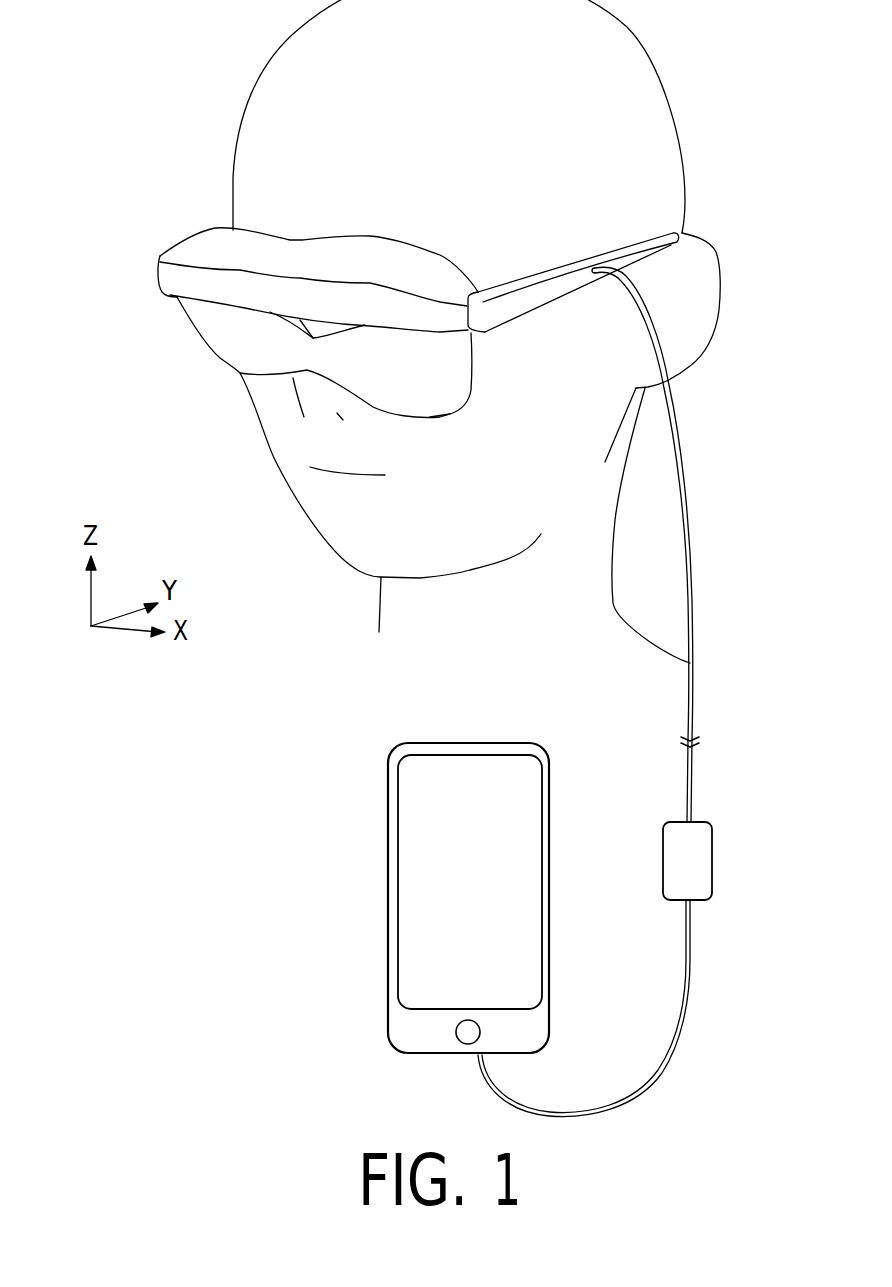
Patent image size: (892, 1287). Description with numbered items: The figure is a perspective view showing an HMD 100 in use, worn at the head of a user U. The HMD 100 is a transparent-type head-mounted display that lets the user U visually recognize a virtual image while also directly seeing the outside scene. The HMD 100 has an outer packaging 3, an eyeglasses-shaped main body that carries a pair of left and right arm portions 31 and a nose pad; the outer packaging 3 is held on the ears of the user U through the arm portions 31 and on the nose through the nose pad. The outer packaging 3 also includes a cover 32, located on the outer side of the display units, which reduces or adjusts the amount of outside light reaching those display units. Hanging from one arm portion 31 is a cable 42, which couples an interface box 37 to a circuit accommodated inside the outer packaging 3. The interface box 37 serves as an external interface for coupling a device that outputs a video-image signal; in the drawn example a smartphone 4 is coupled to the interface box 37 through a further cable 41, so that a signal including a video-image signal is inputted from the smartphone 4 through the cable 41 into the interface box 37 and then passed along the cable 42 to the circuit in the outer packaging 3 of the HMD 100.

The HMD 100 is at (468, 617).
The outer packaging 3 is at (414, 315).
The arm portions 31 is at (566, 264).
The cover 32 is at (218, 358).
The cable 42 is at (681, 467).
The interface box 37 is at (713, 862).
The cable 41 is at (672, 1018).
The smartphone 4 is at (387, 914).
The user U is at (700, 170).